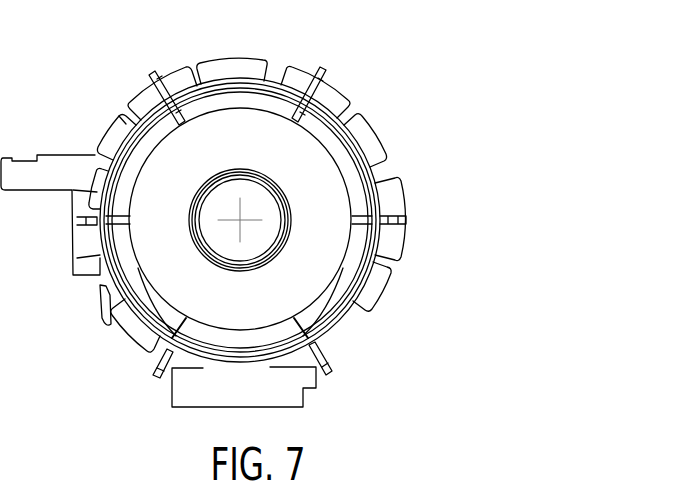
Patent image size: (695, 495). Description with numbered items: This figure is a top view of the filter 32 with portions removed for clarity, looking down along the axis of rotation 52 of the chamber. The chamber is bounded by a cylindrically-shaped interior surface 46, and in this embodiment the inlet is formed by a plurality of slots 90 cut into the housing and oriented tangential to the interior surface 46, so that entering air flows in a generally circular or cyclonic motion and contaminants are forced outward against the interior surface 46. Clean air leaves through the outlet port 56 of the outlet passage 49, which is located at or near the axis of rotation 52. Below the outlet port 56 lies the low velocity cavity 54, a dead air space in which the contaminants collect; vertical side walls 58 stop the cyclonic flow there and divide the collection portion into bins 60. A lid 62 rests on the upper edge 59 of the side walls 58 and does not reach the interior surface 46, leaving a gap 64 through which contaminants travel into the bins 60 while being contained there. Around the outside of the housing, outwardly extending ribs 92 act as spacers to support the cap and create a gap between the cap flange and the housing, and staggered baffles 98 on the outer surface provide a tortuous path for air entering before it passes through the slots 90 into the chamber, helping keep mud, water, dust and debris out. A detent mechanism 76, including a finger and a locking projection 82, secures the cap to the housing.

The filter 32 is at (295, 51).
The interior surface 46 is at (345, 160).
The outlet passage 49 is at (190, 210).
The axis of rotation 52 is at (241, 219).
The low velocity cavity 54 is at (333, 300).
The outlet port 56 is at (250, 268).
The vertical side walls 58 is at (172, 325).
The upper edge 59 is at (180, 322).
The bins 60 is at (213, 338).
The lid 62 is at (310, 215).
The gap 64 is at (142, 145).
The detent mechanism 76 is at (0, 418).
The locking projection 82 is at (405, 219).
The slots 90 is at (232, 82).
The ribs 92 is at (152, 72).
The baffles 98 is at (392, 242).